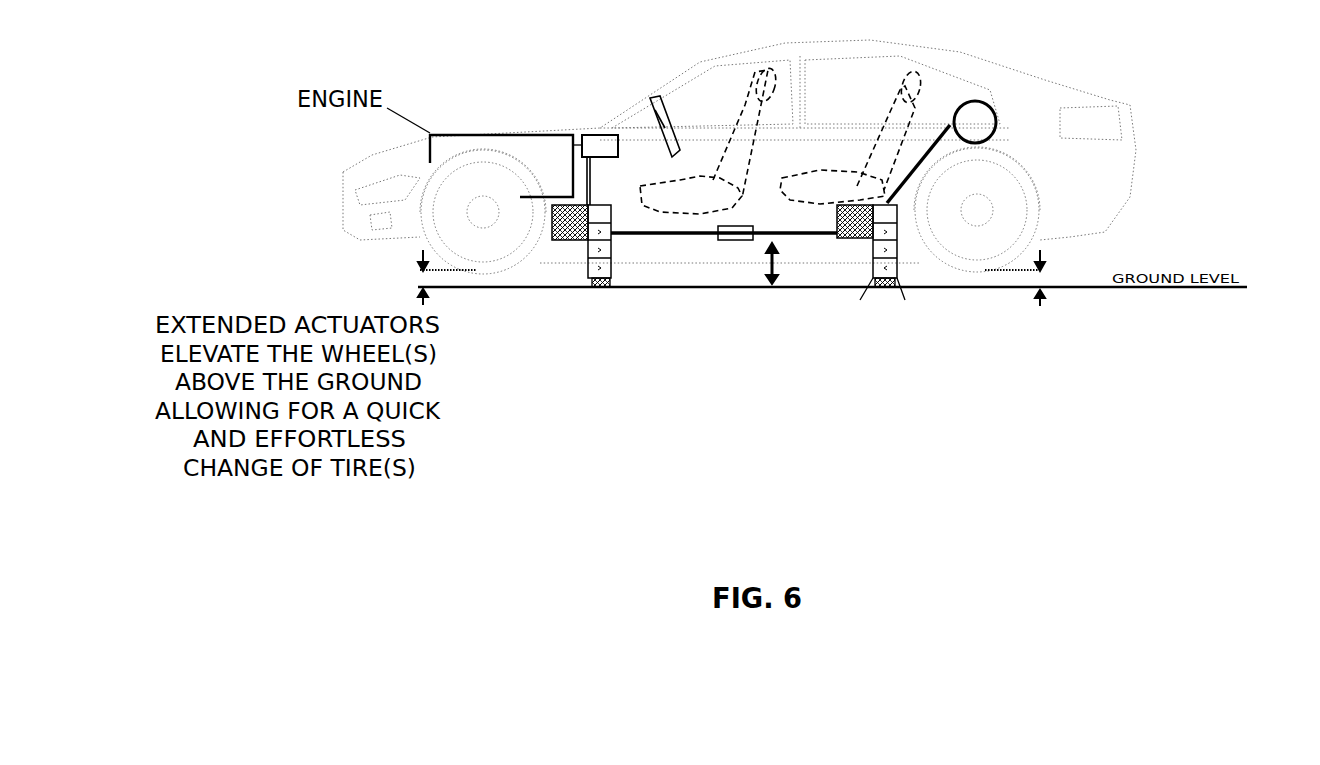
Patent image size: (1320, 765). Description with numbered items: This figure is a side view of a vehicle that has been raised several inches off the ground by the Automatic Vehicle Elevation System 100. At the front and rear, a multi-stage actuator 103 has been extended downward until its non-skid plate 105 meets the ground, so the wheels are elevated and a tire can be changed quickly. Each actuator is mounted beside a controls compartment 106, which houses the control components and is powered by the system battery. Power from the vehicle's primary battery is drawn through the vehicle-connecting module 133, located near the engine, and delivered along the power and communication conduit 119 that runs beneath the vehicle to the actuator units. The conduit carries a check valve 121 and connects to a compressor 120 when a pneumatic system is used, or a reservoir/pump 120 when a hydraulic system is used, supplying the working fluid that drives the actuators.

The Automatic Vehicle Elevation System 100 is at (584, 302).
The multi-stage actuator 103 is at (873, 265).
The non-skid plate 105 is at (887, 287).
The controls compartment 106 is at (840, 239).
The power and communication conduit 119 is at (667, 238).
The compressor or reservoir/pump 120 is at (992, 102).
The check valve 121 is at (725, 241).
The vehicle-connecting module 133 is at (593, 140).